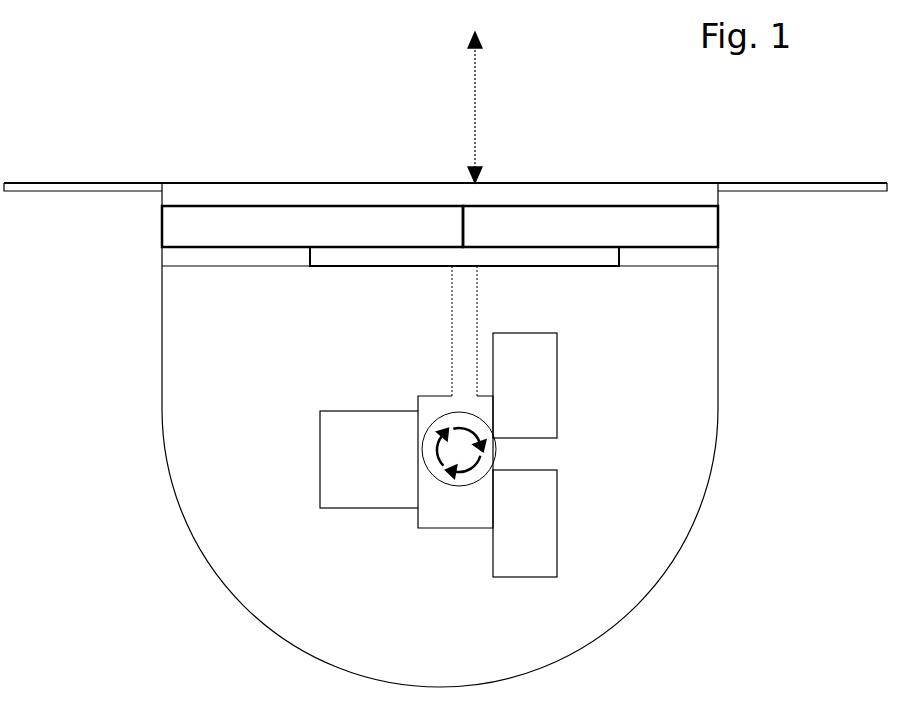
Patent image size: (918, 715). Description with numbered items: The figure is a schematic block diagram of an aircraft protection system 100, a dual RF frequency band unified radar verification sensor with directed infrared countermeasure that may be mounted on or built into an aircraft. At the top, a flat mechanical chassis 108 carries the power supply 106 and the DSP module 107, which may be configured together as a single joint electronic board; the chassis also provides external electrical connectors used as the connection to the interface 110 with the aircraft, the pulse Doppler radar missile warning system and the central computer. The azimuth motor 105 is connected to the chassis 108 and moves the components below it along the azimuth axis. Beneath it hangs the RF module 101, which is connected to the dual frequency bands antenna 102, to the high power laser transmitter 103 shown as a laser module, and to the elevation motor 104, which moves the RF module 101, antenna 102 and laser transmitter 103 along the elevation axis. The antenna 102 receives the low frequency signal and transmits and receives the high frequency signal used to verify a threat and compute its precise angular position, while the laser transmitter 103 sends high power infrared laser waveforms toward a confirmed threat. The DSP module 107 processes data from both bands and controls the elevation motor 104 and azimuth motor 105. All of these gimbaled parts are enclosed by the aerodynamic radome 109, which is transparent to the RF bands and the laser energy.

The aircraft protection system 100 is at (117, 90).
The RF module 101 is at (428, 522).
The dual frequency bands antenna 102 is at (545, 347).
The high power laser transmitter 103 is at (338, 463).
The elevation motor 104 is at (448, 423).
The azimuth motor 105 is at (553, 255).
The power supply 106 is at (182, 222).
The DSP module 107 is at (690, 224).
The mechanical chassis 108 is at (687, 192).
The radome 109 is at (168, 470).
The interface 110 is at (477, 120).